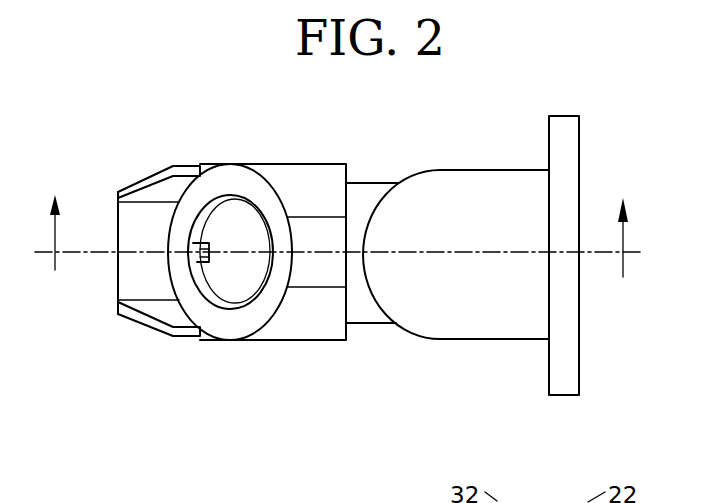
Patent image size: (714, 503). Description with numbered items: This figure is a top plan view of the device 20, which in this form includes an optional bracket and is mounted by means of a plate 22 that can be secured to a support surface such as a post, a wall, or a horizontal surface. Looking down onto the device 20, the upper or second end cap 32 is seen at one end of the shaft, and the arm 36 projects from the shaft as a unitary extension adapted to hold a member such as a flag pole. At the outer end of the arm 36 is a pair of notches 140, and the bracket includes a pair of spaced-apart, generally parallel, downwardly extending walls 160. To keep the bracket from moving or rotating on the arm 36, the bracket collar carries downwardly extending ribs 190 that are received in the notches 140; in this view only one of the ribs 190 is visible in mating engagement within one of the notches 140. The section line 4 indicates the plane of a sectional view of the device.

The device 20 is at (143, 103).
The plate 22 is at (573, 108).
The second end cap 32 is at (507, 160).
The arm 36 is at (362, 325).
The notches 140 is at (193, 244).
The walls 160 is at (148, 176).
The ribs 190 is at (203, 275).
The section line 4- 4 is at (338, 246).